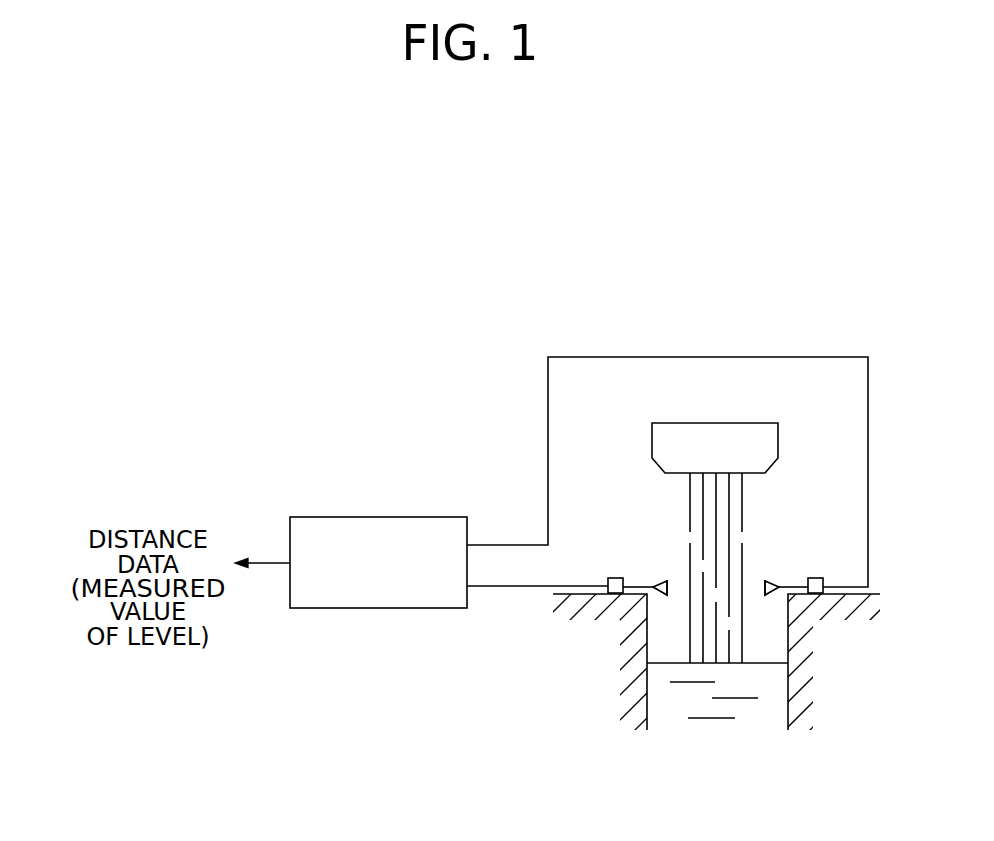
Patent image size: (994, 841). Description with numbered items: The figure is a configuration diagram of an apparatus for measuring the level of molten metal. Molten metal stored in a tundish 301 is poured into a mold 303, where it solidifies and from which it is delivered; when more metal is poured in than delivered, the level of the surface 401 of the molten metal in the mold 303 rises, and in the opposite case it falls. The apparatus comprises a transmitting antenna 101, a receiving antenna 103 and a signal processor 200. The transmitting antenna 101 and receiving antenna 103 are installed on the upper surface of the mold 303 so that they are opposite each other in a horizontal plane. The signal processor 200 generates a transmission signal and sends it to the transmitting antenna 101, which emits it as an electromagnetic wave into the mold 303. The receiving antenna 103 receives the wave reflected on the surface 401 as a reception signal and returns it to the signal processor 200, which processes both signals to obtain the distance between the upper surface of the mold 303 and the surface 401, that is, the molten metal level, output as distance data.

The signal processor 200 is at (407, 517).
The tundish 301 is at (753, 423).
The receiving antenna 103 is at (644, 585).
The transmitting antenna 101 is at (798, 585).
The mold 303 is at (813, 622).
The surface of the molten metal 401 is at (768, 663).